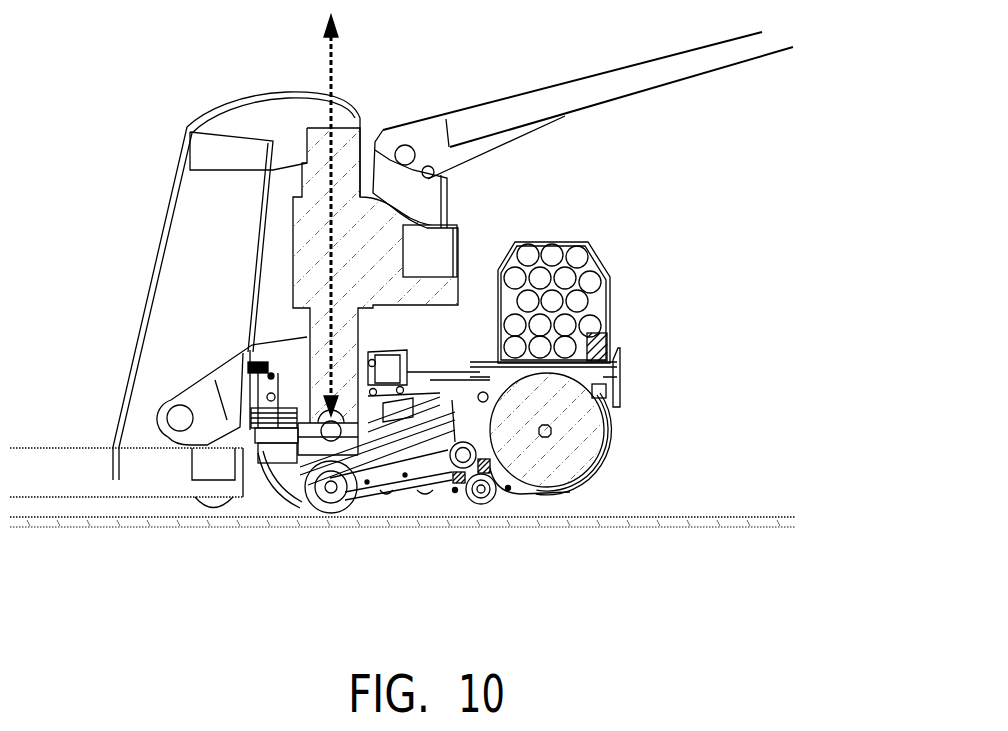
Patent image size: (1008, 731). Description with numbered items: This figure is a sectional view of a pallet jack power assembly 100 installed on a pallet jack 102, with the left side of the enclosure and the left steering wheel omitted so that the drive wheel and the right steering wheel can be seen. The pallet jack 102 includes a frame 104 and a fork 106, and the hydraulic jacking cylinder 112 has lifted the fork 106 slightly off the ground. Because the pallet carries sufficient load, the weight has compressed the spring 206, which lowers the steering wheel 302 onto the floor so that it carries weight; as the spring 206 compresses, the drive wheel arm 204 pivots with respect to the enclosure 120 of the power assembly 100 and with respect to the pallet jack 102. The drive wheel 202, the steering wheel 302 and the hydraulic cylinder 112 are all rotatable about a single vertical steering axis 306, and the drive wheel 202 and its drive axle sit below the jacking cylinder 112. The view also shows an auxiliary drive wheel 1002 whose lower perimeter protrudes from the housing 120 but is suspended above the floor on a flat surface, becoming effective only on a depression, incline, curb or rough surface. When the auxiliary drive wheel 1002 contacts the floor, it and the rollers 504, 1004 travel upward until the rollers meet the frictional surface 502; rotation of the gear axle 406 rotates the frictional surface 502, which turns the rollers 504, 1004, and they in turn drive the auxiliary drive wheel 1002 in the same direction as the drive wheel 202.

The pallet jack power assembly 100 is at (566, 553).
The pallet jack 102 is at (176, 60).
The frame 104 is at (175, 165).
The fork 106 is at (97, 448).
The hydraulic jacking cylinder 112 is at (307, 338).
The enclosure 120 is at (608, 445).
The drive wheel 202 is at (307, 503).
The drive wheel arm 204 is at (403, 488).
The spring 206 is at (258, 430).
The steering wheel 302 is at (267, 487).
The vertical steering axis 306 is at (331, 67).
The gear axle 406 is at (568, 341).
The frictional surface 502 is at (462, 447).
The roller 504 is at (460, 490).
The auxiliary drive wheel 1002 is at (488, 510).
The roller 1004 is at (495, 467).